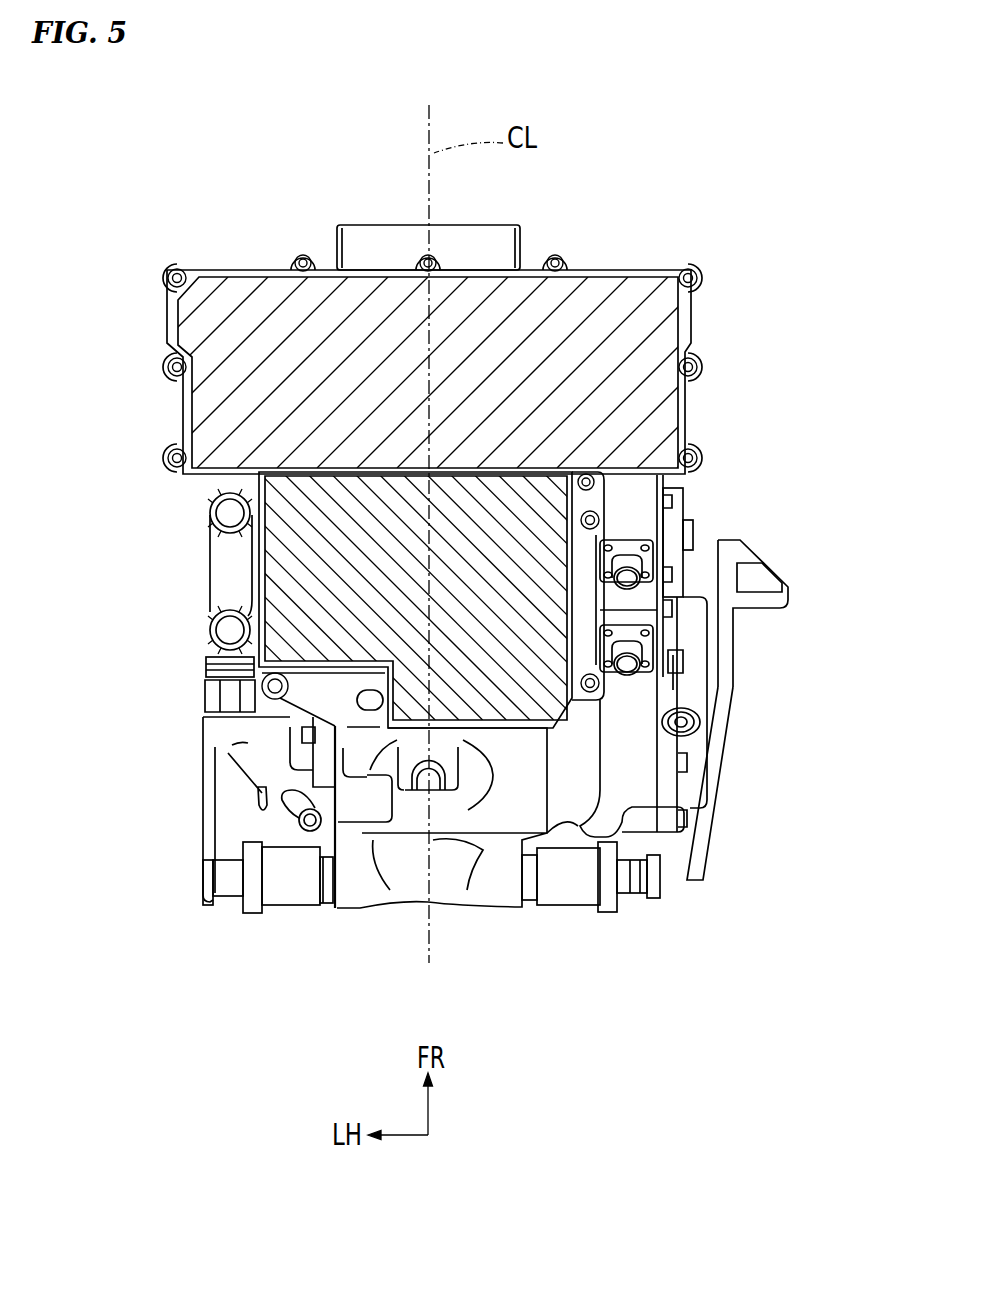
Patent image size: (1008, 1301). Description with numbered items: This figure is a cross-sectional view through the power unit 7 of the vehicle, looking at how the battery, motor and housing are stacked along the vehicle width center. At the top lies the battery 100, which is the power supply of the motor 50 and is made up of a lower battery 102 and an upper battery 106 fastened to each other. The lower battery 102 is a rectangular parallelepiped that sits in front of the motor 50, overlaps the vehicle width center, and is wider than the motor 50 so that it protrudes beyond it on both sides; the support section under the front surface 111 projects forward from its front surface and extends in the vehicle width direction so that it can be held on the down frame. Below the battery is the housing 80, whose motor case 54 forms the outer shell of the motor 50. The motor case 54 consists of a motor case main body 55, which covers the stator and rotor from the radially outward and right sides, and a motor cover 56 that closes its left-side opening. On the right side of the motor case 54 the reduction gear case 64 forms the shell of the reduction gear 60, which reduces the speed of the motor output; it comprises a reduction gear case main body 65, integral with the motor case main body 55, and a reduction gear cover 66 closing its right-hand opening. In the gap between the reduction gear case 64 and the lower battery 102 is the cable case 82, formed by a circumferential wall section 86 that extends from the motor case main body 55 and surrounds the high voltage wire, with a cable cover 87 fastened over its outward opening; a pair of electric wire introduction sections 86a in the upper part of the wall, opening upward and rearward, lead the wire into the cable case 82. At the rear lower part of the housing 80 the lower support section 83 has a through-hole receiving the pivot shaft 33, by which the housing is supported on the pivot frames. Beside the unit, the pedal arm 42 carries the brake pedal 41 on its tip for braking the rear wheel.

The power unit 7 is at (93, 215).
The pivot shaft 33 is at (231, 886).
The brake pedal 41 is at (778, 567).
The pedal arm 42 is at (700, 847).
The motor 50 is at (510, 799).
The motor case 54 is at (465, 845).
The motor case main body 55 is at (560, 808).
The motor cover 56 is at (305, 767).
The reduction gear 60 is at (681, 722).
The reduction gear case 64 is at (720, 701).
The reduction gear case main body 65 is at (633, 745).
The reduction gear cover 66 is at (697, 679).
The housing 80 is at (706, 792).
The cable case 82 is at (707, 524).
The lower support section 83 is at (335, 878).
The circumferential wall section 86 is at (648, 592).
The electric wire introduction sections 86a is at (633, 568).
The cable cover 87 is at (674, 515).
The battery 100 is at (168, 410).
The lower battery 102 is at (222, 262).
The upper battery 106 is at (255, 567).
The support section under the front surface 111 is at (522, 243).